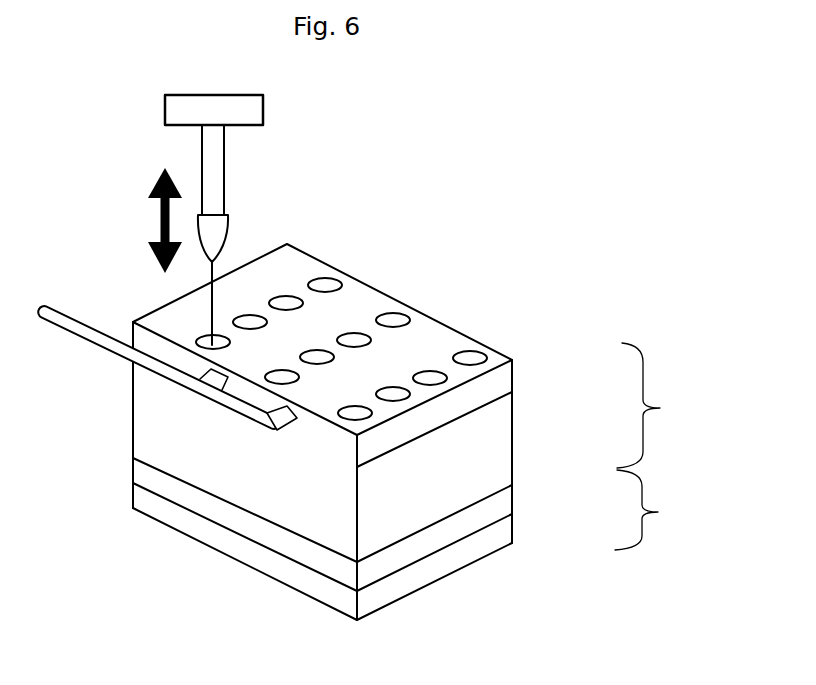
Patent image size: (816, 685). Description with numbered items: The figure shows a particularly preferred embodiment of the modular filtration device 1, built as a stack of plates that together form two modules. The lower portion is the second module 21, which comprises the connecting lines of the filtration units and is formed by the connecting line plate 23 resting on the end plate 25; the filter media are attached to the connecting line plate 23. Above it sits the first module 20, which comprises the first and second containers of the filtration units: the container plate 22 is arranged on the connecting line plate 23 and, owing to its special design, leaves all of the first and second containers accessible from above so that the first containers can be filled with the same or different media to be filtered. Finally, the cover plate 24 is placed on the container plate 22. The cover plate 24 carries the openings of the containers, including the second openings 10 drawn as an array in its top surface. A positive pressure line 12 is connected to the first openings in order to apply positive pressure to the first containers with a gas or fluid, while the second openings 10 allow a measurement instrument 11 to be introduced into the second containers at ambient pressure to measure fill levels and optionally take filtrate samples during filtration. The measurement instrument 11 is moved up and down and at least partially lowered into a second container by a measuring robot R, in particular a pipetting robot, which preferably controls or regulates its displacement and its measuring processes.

The filtration device 1 is at (373, 287).
The second openings 10 is at (492, 349).
The measurement instrument 11 is at (224, 152).
The positive pressure line 12 is at (95, 343).
The first module 20 is at (661, 405).
The second module 21 is at (658, 510).
The container plate 22 is at (500, 455).
The connecting line plate 23 is at (500, 503).
The cover plate 24 is at (500, 380).
The end plate 25 is at (503, 535).
The measuring robot R is at (165, 103).